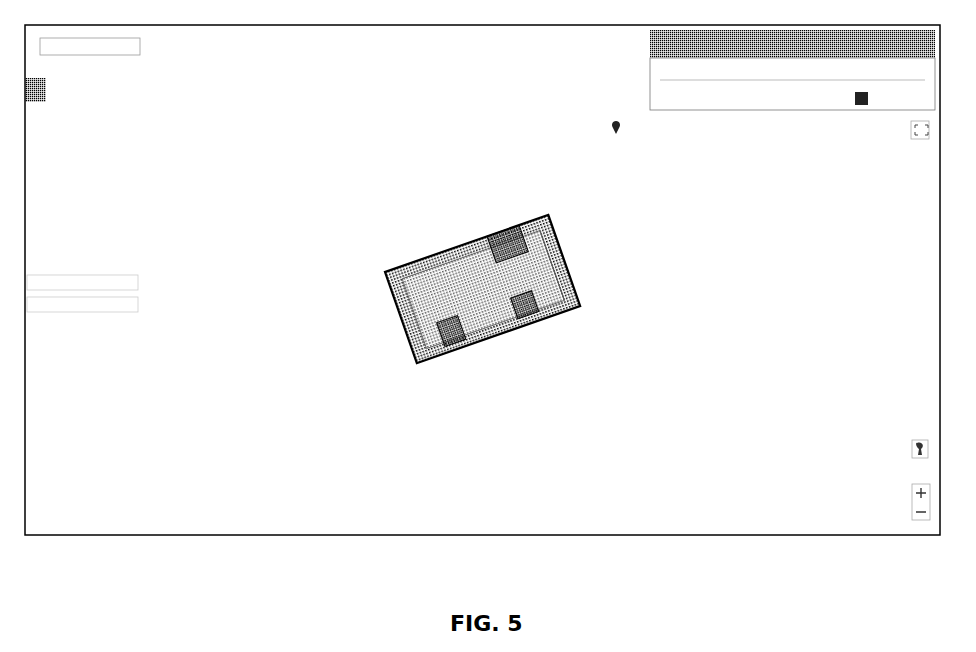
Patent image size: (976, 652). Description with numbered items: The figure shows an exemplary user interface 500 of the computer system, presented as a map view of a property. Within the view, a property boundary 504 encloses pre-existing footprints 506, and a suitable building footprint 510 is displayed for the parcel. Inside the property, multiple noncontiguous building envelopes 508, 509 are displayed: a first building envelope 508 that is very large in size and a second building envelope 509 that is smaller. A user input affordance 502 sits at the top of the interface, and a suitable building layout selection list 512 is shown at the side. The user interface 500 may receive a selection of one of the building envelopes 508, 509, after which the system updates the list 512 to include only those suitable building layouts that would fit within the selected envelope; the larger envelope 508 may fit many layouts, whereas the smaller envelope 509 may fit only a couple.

The user interface 500 is at (231, 78).
The user input affordance 502 is at (650, 72).
The property boundary 504 is at (483, 240).
The pre-existing footprints 506 is at (486, 292).
The first building envelope 508 is at (535, 315).
The second building envelope 509 is at (457, 342).
The suitable building footprint 510 is at (545, 250).
The suitable building layout selection list 512 is at (92, 272).